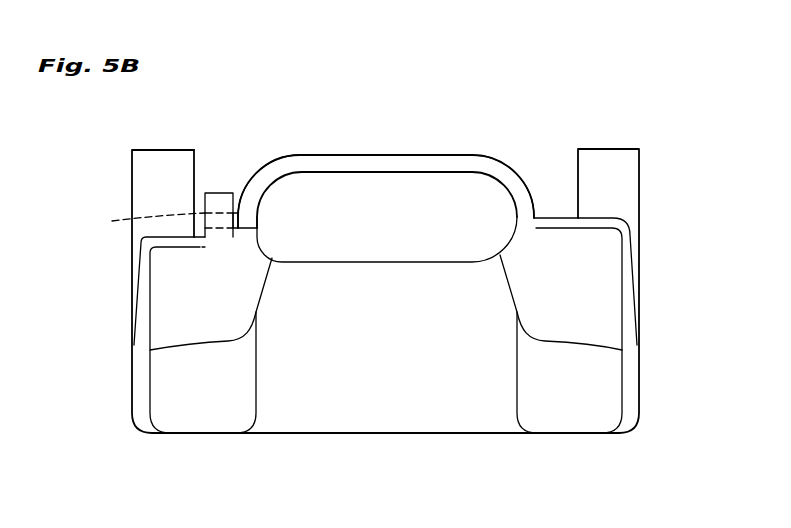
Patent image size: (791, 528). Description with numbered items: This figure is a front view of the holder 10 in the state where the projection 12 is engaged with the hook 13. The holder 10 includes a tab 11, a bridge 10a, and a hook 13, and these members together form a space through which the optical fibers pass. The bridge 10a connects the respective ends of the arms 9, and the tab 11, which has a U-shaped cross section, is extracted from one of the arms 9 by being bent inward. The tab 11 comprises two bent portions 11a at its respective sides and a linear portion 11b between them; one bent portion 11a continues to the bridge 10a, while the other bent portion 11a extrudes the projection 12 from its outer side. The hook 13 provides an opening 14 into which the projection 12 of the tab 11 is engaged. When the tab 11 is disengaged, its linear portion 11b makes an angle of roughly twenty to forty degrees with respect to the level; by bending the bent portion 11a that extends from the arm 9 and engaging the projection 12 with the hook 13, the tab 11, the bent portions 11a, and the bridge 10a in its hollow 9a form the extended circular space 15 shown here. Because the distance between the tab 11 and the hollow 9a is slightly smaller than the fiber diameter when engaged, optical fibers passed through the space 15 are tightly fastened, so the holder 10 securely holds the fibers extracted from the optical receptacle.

The holder 10 is at (433, 88).
The bridge 10a is at (458, 392).
The arms 9 is at (145, 398).
The hollow 9a is at (382, 258).
The tab 11 is at (322, 150).
The bent portions 11a is at (265, 172).
The linear portion 11b is at (473, 160).
The extended circular space 15 is at (366, 206).
The projection 12 is at (237, 206).
The hook 13 is at (218, 202).
The opening 14 is at (159, 221).